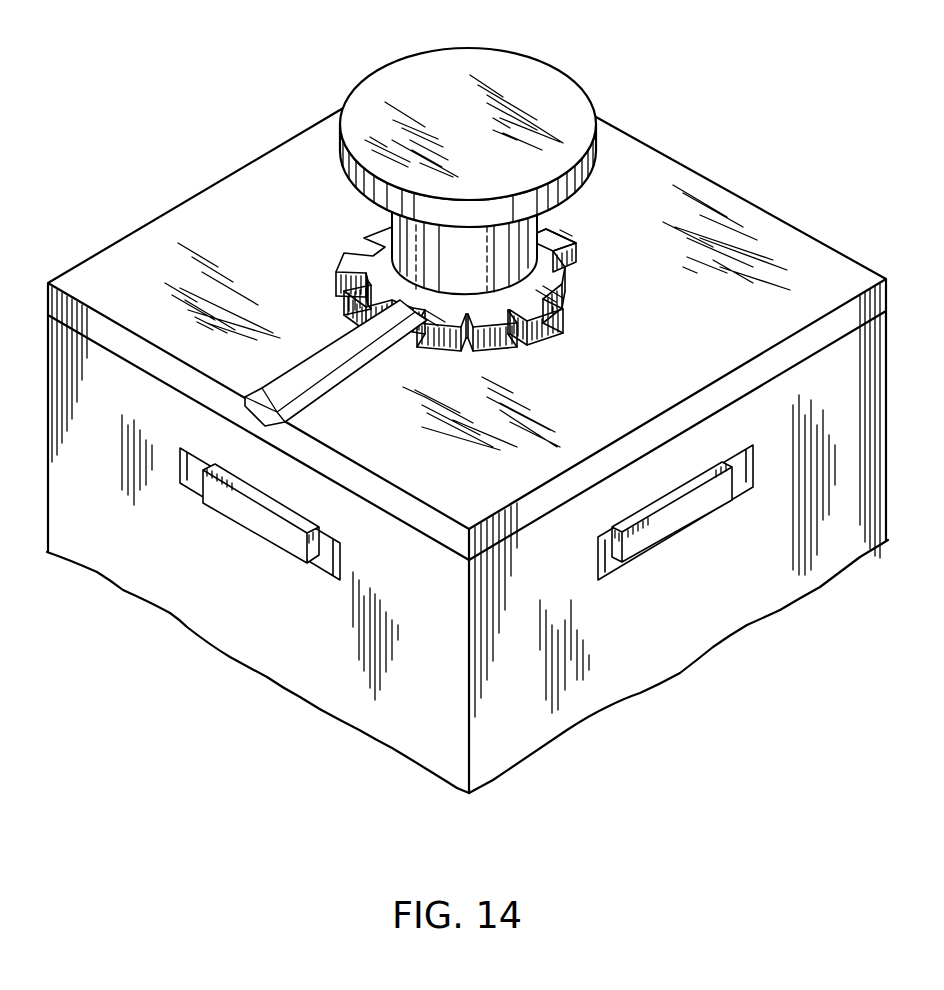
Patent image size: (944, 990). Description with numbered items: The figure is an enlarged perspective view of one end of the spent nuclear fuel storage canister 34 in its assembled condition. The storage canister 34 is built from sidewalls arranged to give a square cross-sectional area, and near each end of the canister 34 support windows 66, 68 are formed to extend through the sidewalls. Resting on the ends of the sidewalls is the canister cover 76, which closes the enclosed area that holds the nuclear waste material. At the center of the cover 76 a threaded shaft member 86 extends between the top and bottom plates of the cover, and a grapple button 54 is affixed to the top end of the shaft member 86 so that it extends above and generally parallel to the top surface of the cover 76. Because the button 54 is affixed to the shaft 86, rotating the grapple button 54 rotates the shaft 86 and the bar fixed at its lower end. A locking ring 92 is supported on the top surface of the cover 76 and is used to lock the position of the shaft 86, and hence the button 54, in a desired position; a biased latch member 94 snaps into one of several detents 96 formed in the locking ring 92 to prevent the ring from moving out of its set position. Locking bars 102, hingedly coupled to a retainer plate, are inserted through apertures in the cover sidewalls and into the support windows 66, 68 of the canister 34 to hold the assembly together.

The storage canister 34 is at (711, 650).
The canister cover 76 is at (794, 248).
The grapple button 54 is at (530, 62).
The threaded shaft member 86 is at (482, 266).
The locking ring 92 is at (580, 224).
The detents 96 is at (358, 258).
The biased latch member 94 is at (350, 348).
The support window 68 is at (180, 458).
The support window 66 is at (752, 470).
The locking bars 102 is at (262, 531).